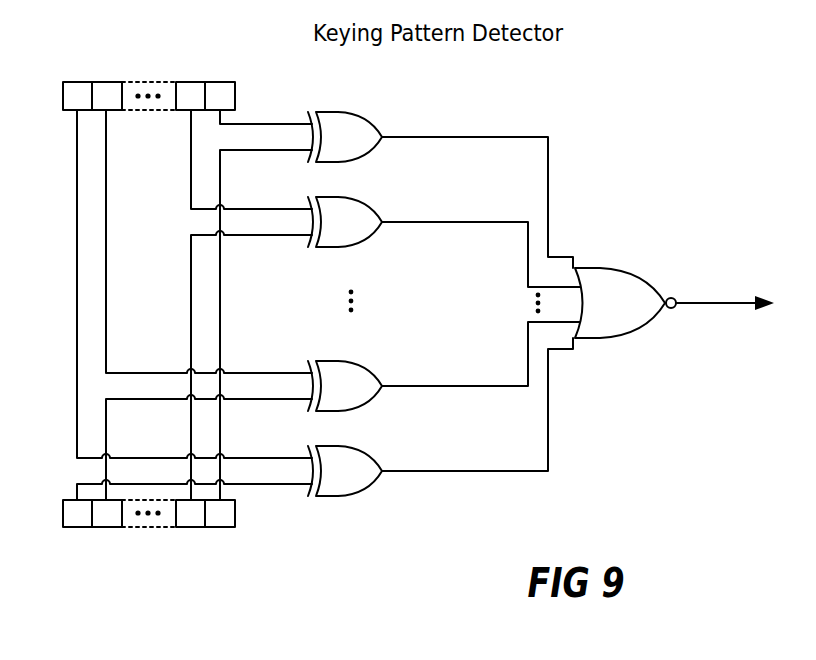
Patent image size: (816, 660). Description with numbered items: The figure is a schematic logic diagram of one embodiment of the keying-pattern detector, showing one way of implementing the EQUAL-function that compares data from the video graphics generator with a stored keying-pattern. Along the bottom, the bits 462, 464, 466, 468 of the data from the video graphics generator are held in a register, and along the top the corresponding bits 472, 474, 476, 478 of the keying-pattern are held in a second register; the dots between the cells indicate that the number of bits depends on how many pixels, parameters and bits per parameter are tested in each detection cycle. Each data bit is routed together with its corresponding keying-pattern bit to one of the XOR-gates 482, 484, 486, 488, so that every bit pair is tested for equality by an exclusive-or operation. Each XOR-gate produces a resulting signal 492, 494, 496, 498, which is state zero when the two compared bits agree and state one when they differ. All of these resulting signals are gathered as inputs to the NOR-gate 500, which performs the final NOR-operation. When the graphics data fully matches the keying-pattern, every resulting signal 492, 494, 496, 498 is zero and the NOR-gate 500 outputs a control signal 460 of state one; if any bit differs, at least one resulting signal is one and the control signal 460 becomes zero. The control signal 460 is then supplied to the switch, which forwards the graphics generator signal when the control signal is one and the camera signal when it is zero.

The control signal 460 is at (687, 300).
The bit of the data from the video graphics generator 462 is at (77, 517).
The bit of the data from the video graphics generator 464 is at (110, 518).
The bit of the data from the video graphics generator 466 is at (190, 518).
The bit of the data from the video graphics generator 468 is at (228, 517).
The bit of the keying-pattern 472 is at (78, 90).
The bit of the keying-pattern 474 is at (108, 92).
The bit of the keying-pattern 476 is at (190, 90).
The bit of the keying-pattern 478 is at (222, 92).
The XOR-gate 482 is at (360, 496).
The XOR-gate 484 is at (370, 361).
The XOR-gate 486 is at (318, 250).
The XOR-gate 488 is at (368, 112).
The resulting signal 492 is at (465, 470).
The resulting signal 494 is at (465, 383).
The resulting signal 496 is at (478, 222).
The resulting signal 498 is at (475, 136).
The NOR-gate 500 is at (618, 280).